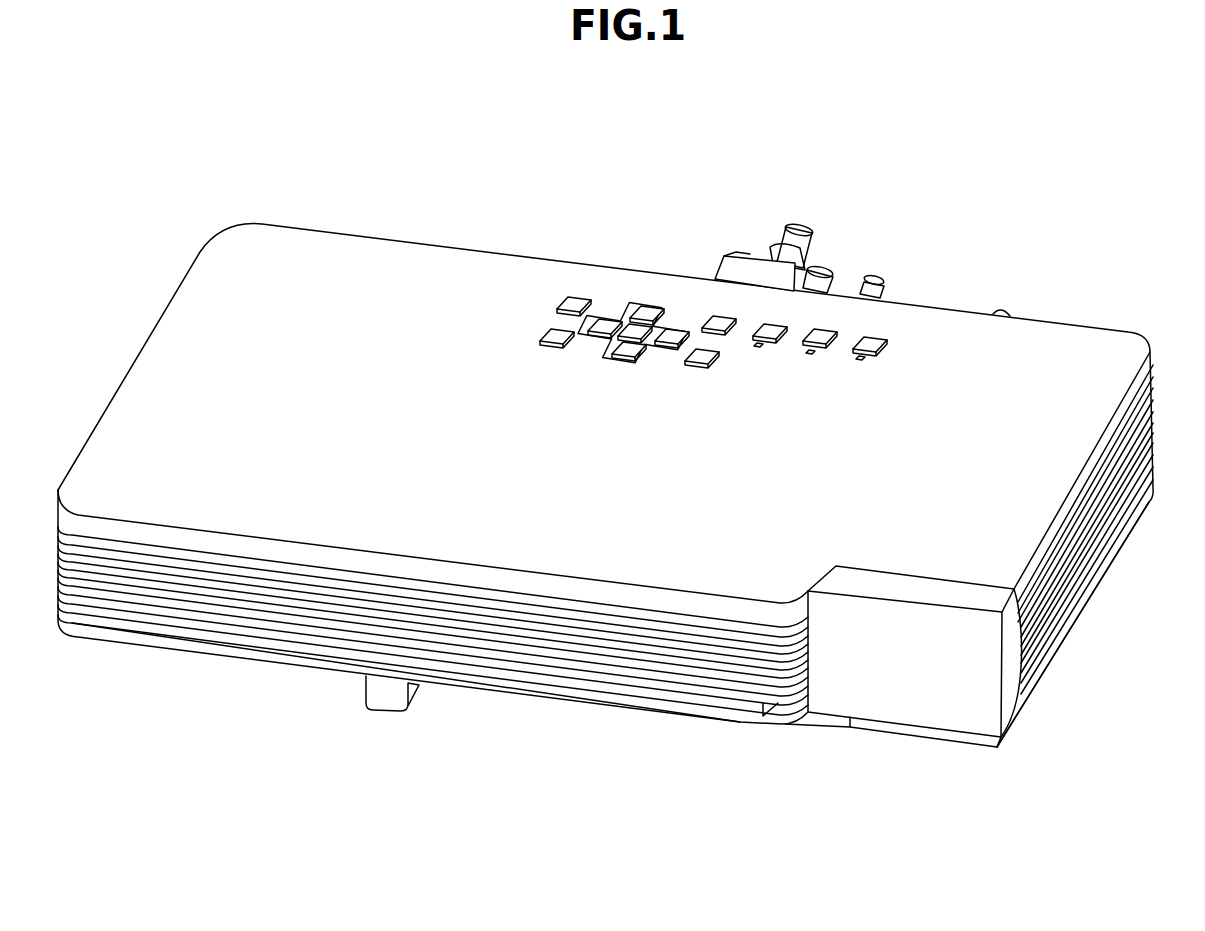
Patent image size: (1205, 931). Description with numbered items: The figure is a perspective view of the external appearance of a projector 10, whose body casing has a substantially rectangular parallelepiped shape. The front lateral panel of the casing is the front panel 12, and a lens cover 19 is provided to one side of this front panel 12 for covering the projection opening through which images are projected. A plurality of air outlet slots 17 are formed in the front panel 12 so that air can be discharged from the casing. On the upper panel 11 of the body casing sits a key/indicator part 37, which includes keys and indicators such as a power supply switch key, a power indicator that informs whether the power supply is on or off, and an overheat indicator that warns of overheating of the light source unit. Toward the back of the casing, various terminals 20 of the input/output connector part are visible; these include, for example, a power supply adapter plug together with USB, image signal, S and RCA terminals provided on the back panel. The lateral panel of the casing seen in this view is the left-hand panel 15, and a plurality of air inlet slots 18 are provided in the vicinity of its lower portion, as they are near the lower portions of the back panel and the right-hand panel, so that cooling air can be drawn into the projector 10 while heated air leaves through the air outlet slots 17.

The projector 10 is at (574, 184).
The upper panel 11 is at (363, 272).
The front panel 12 is at (498, 675).
The left-hand panel 15 is at (1085, 583).
The air outlet slots 17 is at (598, 695).
The air inlet slots 18 is at (1112, 507).
The lens cover 19 is at (937, 705).
The terminals 20 is at (838, 236).
The key/indicator part 37 is at (662, 276).